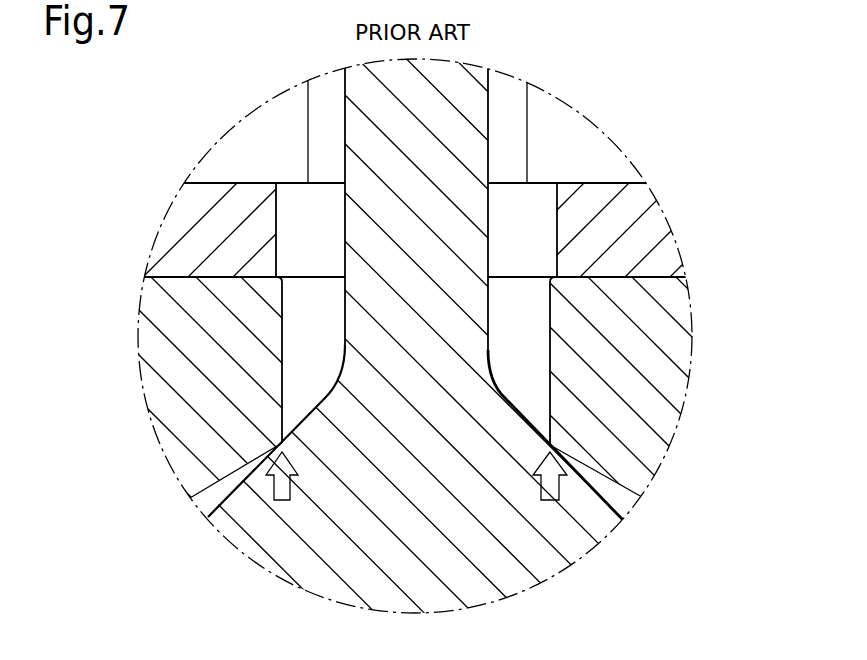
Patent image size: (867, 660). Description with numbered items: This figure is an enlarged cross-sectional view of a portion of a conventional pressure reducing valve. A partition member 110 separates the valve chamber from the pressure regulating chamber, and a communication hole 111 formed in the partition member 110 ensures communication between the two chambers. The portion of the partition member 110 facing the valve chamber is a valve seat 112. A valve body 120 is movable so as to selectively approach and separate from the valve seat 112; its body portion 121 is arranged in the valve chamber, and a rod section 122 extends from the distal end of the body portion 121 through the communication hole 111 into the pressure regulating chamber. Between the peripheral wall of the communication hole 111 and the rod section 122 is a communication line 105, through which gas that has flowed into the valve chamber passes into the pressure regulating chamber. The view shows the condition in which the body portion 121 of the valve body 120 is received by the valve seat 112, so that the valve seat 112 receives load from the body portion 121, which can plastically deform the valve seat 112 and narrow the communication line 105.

The communication line 105 is at (520, 302).
The partition member 110 is at (667, 368).
The communication hole 111 is at (285, 297).
The valve seat 112 is at (232, 478).
The valve body 120 is at (577, 545).
The body portion 121 is at (515, 577).
The rod section 122 is at (467, 127).